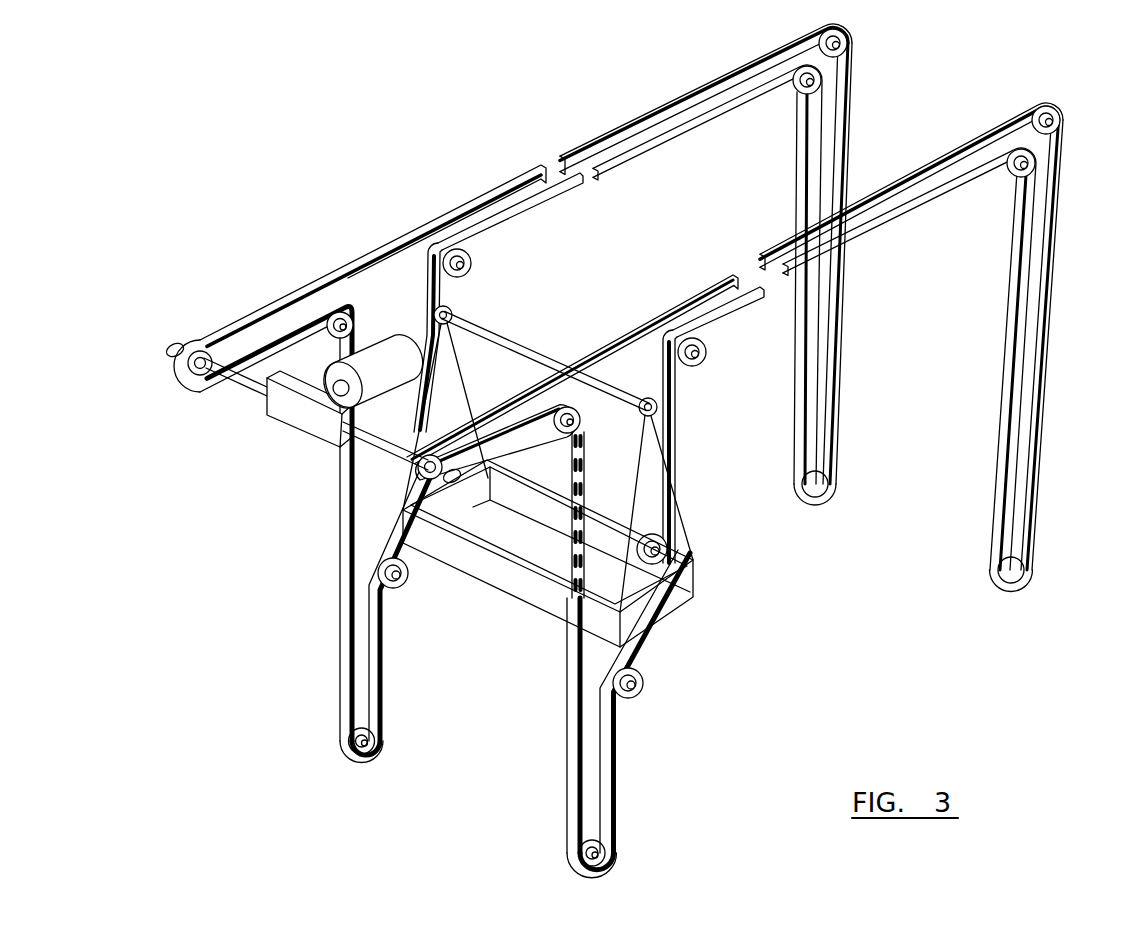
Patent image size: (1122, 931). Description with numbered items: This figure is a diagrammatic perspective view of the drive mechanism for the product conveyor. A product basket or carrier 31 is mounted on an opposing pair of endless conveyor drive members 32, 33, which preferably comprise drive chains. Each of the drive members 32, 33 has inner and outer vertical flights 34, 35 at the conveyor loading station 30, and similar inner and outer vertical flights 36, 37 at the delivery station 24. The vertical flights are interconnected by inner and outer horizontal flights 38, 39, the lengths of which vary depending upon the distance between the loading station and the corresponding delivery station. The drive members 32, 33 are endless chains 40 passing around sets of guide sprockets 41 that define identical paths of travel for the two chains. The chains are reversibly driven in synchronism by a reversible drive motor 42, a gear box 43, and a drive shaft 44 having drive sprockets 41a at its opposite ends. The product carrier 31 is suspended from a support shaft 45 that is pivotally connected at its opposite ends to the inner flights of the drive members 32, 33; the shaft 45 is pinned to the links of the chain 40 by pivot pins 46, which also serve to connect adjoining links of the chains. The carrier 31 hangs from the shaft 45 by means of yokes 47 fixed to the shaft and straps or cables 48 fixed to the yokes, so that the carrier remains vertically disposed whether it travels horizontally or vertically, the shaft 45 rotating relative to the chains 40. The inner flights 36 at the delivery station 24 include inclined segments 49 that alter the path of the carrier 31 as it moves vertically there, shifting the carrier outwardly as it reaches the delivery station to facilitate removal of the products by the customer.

The delivery station 24 is at (440, 777).
The loading station 30 is at (909, 347).
The product carrier 31 is at (530, 590).
The endless conveyor drive member 32 is at (556, 150).
The endless conveyor drive member 33 is at (860, 247).
The inner vertical flight 34 is at (797, 449).
The outer vertical flight 35 is at (833, 393).
The inner vertical flight 36 is at (384, 633).
The outer vertical flight 37 is at (340, 634).
The inner horizontal flight 38 is at (702, 120).
The outer horizontal flight 39 is at (656, 114).
The endless chain 40 is at (585, 458).
The guide sprocket 41 is at (847, 44).
The drive sprocket 41a is at (197, 375).
The reversible drive motor 42 is at (374, 352).
The gear box 43 is at (298, 418).
The drive shaft 44 is at (234, 382).
The support shaft 45 is at (531, 352).
The pivot pin 46 is at (430, 300).
The yoke 47 is at (452, 306).
The strap or cable 48 is at (468, 381).
The inclined segment 49 is at (384, 566).